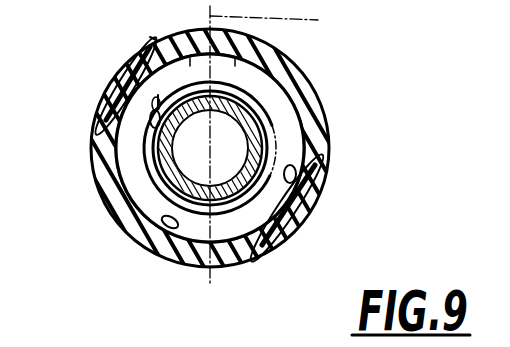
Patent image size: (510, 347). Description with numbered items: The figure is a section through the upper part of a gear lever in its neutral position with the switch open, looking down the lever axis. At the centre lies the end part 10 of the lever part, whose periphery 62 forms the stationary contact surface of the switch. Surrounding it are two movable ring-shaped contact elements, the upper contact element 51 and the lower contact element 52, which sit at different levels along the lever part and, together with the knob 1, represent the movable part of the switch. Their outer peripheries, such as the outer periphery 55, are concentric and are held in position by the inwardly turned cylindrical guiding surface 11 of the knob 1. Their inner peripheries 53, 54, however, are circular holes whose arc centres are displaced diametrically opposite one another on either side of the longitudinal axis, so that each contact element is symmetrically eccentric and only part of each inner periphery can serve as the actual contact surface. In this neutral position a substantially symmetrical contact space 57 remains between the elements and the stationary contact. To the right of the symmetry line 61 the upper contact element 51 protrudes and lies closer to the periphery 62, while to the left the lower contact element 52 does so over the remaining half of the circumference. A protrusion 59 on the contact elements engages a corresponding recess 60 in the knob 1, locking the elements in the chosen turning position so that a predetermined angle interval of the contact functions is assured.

The knob 1 is at (288, 237).
The end part 10 is at (297, 112).
The inwardly turned cylindrical guiding surface 11 is at (150, 248).
The upper contact element 51 is at (190, 54).
The lower contact element 52 is at (150, 37).
The inner periphery of upper contact element 53 is at (154, 101).
The inner periphery of lower contact element 54 is at (160, 190).
The outer periphery of upper contact element 55 is at (150, 117).
The contact space 57 is at (250, 107).
The protrusion 59 is at (308, 135).
The recess 60 is at (310, 187).
The symmetry line 61 is at (318, 20).
The periphery of stationary contact element 62 is at (245, 92).